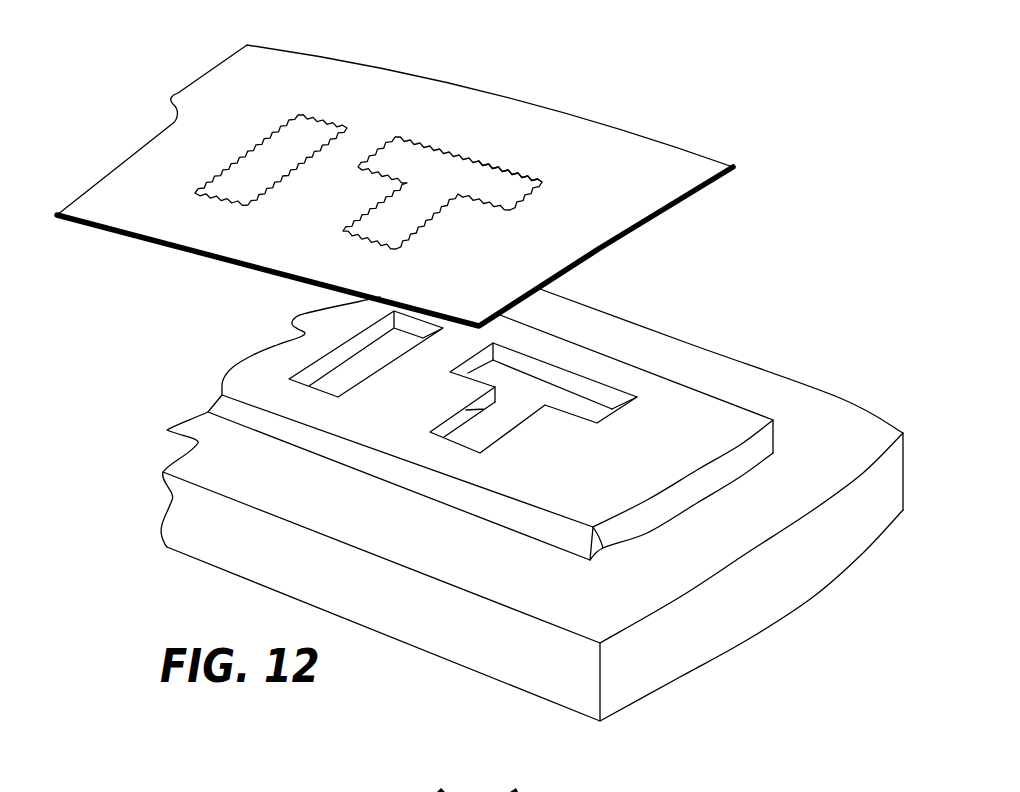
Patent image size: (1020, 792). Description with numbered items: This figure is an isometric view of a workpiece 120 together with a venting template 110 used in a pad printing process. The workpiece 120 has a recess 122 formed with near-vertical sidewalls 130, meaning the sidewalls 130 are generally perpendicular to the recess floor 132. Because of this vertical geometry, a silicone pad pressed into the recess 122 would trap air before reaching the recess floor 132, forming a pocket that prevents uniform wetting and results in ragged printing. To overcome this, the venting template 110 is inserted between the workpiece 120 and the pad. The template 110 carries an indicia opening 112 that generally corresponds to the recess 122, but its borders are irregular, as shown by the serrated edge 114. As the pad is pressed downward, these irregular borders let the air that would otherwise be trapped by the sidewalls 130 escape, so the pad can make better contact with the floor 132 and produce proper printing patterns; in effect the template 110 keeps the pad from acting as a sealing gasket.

The venting template 110 is at (652, 158).
The indicia opening 112 is at (425, 163).
The serrated edge of aperture 114 is at (484, 165).
The workpiece 120 is at (667, 425).
The recess 122 is at (588, 408).
The sidewalls 130 is at (533, 400).
The recess floor 132 is at (601, 405).